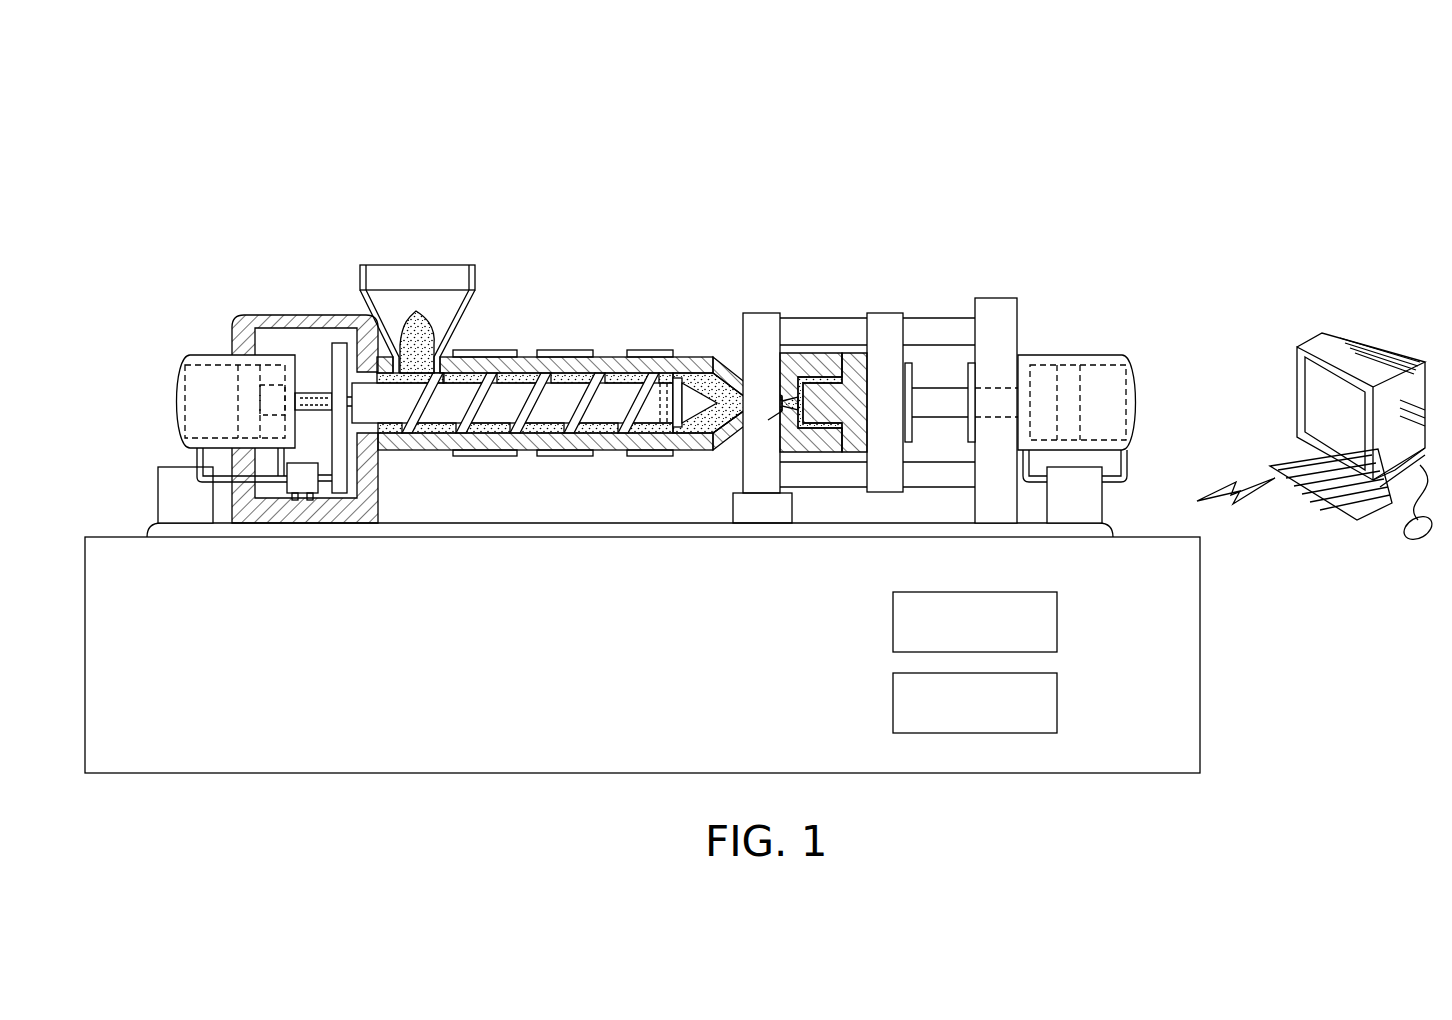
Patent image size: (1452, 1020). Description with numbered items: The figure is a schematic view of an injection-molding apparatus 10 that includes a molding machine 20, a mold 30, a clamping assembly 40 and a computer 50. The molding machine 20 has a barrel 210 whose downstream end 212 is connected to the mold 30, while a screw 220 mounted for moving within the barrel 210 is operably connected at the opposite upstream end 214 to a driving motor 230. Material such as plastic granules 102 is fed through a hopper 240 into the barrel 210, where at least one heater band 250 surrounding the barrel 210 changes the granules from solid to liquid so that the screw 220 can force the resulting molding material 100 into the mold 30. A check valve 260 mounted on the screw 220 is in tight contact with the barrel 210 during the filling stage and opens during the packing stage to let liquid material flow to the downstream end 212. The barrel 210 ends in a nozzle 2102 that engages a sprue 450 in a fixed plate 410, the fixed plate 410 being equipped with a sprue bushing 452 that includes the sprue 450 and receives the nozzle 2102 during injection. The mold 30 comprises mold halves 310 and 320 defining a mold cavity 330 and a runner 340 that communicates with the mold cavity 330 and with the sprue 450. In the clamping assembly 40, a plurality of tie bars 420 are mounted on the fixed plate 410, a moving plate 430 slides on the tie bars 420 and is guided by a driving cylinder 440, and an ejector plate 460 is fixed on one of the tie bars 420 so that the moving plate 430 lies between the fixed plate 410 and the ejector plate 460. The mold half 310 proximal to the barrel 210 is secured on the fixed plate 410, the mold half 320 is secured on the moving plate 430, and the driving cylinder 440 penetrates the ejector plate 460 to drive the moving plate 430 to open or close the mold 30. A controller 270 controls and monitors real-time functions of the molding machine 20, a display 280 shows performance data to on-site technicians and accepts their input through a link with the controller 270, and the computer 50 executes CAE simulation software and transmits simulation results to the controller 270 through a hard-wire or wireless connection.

The injection-molding apparatus 10 is at (111, 97).
The molding machine 20 is at (157, 455).
The mold 30 is at (820, 387).
The clamping assembly 40 is at (1125, 252).
The computer 50 is at (1334, 336).
The molding material 100 is at (690, 357).
The plastic granules 102 is at (418, 312).
The barrel 210 is at (527, 357).
The downstream end 212 is at (733, 440).
The upstream end 214 is at (399, 453).
The screw 220 is at (611, 400).
The driving motor 230 is at (207, 355).
The hopper 240 is at (360, 277).
The heater band 250 is at (566, 350).
The check valve 260 is at (664, 456).
The controller 270 is at (1057, 703).
The display 280 is at (1057, 620).
The mold half 310 is at (798, 350).
The mold half 320 is at (857, 362).
The mold cavity 330 is at (833, 445).
The runner 340 is at (797, 418).
The fixed plate 410 is at (762, 325).
The tie bars 420 is at (940, 332).
The moving plate 430 is at (886, 325).
The driving cylinder 440 is at (1096, 355).
The sprue 450 is at (752, 413).
The sprue bushing 452 is at (768, 424).
The ejector plate 460 is at (997, 310).
The nozzle 2102 is at (738, 392).